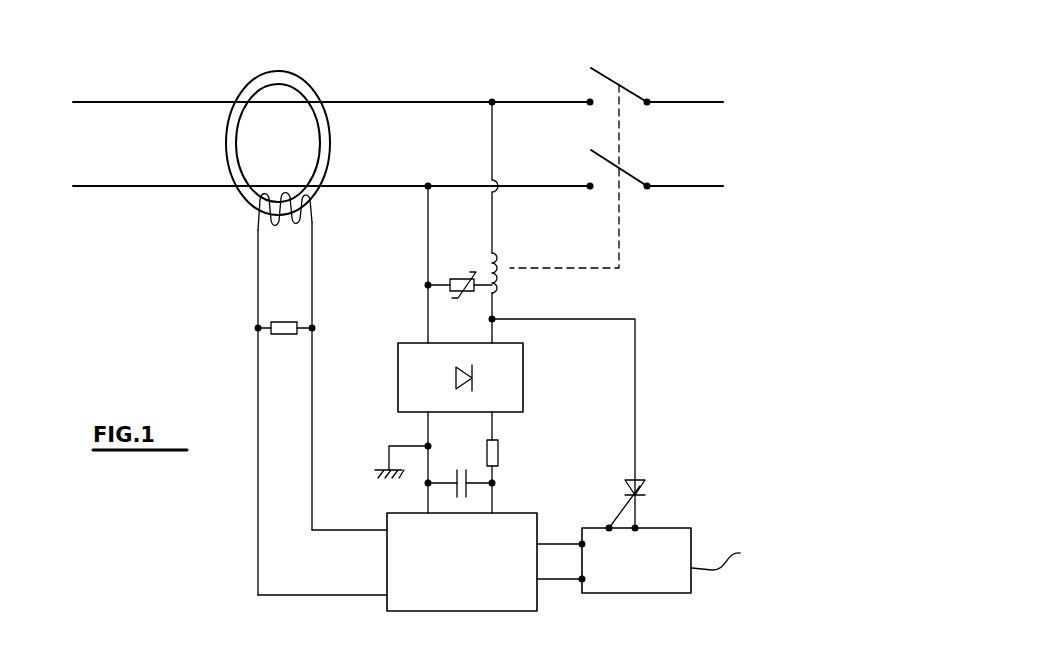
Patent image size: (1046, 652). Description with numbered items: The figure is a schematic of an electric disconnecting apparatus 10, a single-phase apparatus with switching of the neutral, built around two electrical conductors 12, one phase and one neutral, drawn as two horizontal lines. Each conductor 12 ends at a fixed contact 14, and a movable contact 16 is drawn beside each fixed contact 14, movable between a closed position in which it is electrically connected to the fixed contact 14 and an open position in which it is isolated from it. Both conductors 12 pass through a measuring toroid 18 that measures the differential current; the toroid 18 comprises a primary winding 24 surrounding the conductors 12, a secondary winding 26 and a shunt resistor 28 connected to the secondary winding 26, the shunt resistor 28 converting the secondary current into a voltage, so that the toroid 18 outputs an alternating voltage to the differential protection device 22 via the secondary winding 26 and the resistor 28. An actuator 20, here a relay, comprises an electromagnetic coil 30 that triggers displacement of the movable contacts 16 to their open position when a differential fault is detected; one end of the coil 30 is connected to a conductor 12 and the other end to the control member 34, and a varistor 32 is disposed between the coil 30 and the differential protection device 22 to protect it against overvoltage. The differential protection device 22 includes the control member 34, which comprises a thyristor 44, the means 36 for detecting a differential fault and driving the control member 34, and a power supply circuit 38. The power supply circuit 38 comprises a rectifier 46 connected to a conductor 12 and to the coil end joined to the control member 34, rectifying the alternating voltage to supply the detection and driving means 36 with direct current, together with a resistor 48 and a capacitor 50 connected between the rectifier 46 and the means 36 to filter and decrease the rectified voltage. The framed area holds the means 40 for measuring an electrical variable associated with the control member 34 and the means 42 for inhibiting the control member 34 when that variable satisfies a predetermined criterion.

The electric disconnecting apparatus 10 is at (190, 271).
The electrical conductors 12 is at (412, 100).
The fixed contact 14 is at (589, 97).
The movable contact 16 is at (612, 79).
The measuring toroid 18 is at (306, 300).
The actuator 20 is at (554, 214).
The differential protection device 22 is at (604, 425).
The primary winding 24 is at (310, 84).
The secondary winding 26 is at (281, 226).
The shunt resistor 28 is at (283, 337).
The electromagnetic coil 30 is at (500, 293).
The varistor 32 is at (457, 278).
The control member 34 is at (616, 510).
The means for detecting a differential fault and driving the control member 36 is at (428, 613).
The power supply circuit 38 is at (468, 364).
The means for measuring an electrical variable 40 is at (668, 560).
The means for inhibiting the control member 42 is at (668, 560).
The thyristor 44 is at (648, 489).
The rectifier 46 is at (520, 379).
The resistor 48 is at (500, 455).
The capacitor 50 is at (447, 476).